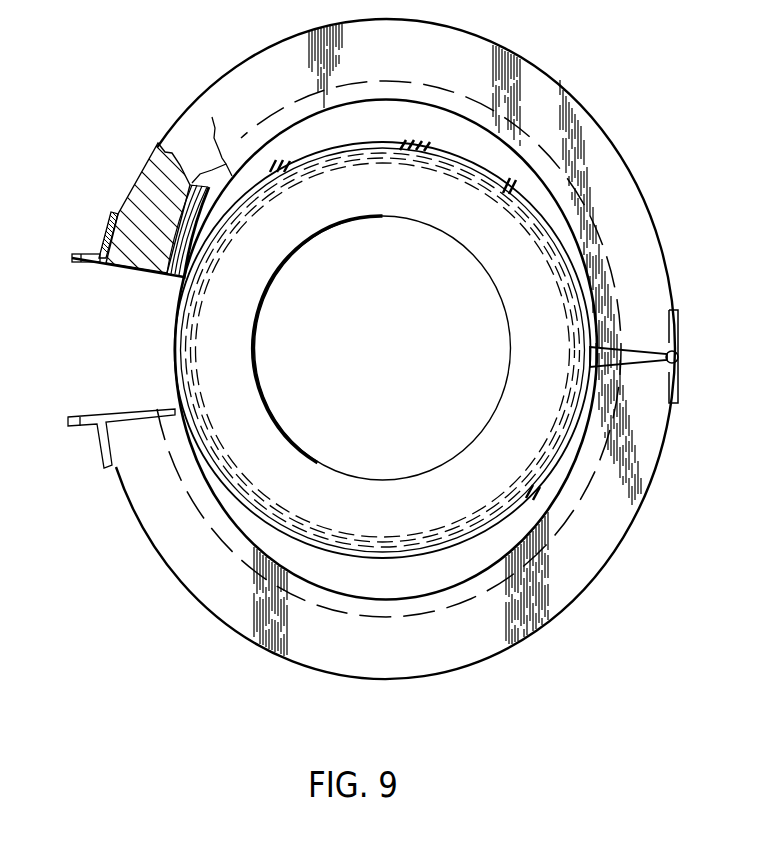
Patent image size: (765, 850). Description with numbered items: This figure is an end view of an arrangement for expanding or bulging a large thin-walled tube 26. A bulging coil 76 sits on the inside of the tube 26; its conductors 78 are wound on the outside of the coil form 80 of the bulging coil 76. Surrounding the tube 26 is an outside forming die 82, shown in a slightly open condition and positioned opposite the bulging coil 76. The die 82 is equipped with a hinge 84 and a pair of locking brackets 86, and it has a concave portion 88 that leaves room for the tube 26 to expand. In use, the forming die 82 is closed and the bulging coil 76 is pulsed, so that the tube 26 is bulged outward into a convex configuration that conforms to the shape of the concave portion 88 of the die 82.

The tube 26 is at (177, 321).
The bulging coil 76 is at (531, 328).
The conductors 78 is at (532, 238).
The coil form 80 is at (262, 294).
The outside forming die 82 is at (537, 83).
The hinge 84 is at (679, 357).
The locking brackets 86 is at (75, 256).
The concave portion 88 is at (194, 495).